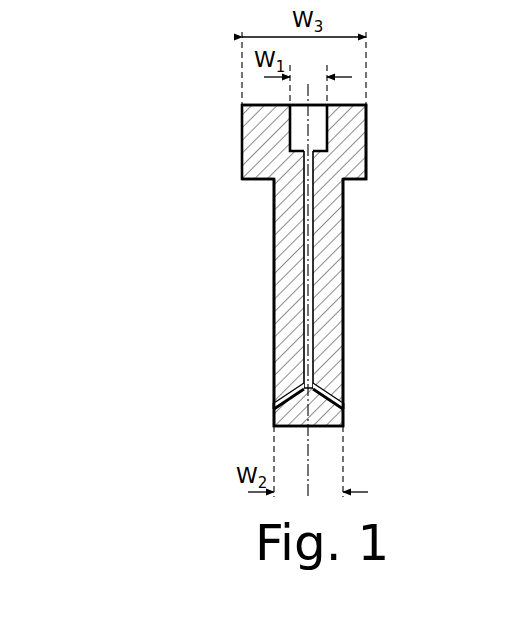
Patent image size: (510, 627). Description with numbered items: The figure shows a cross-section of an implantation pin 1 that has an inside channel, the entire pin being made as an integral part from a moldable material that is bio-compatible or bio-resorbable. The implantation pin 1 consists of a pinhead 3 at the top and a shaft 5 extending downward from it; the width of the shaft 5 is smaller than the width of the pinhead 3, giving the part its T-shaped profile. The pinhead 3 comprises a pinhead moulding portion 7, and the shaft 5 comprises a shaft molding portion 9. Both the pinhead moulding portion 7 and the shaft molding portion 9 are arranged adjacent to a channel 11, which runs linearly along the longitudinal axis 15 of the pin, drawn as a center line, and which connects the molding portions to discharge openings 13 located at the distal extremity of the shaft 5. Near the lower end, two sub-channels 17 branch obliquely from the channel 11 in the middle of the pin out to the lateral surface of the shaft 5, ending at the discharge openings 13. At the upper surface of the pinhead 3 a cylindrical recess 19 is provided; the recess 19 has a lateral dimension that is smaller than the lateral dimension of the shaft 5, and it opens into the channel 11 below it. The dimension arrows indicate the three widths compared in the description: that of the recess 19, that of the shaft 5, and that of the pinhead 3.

The implantation pin 1 is at (140, 227).
The pinhead 3 is at (222, 147).
The shaft 5 is at (222, 298).
The pinhead moulding portion 7 is at (318, 169).
The shaft molding portion 9 is at (318, 263).
The channel 11 is at (313, 315).
The discharge openings 13 is at (275, 406).
The longitudinal axis 15 is at (309, 465).
The sub-channels 17 is at (277, 381).
The cylindrical recess 19 is at (296, 134).